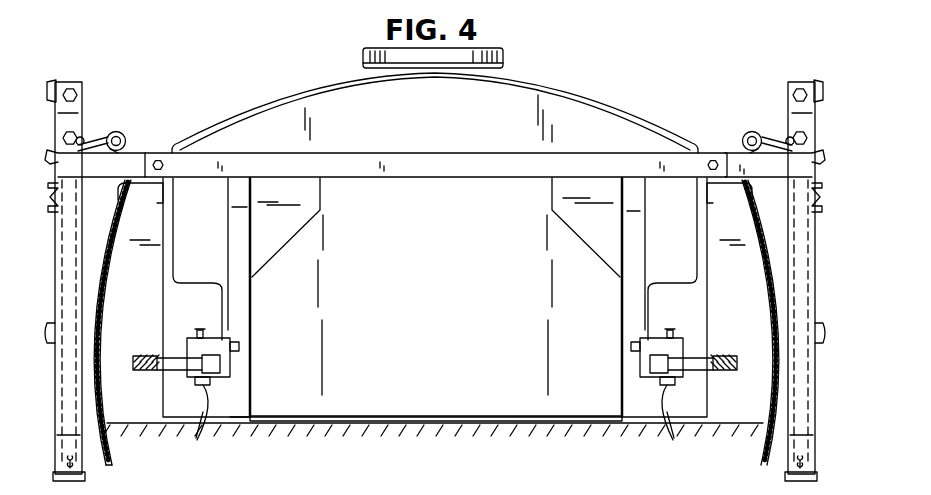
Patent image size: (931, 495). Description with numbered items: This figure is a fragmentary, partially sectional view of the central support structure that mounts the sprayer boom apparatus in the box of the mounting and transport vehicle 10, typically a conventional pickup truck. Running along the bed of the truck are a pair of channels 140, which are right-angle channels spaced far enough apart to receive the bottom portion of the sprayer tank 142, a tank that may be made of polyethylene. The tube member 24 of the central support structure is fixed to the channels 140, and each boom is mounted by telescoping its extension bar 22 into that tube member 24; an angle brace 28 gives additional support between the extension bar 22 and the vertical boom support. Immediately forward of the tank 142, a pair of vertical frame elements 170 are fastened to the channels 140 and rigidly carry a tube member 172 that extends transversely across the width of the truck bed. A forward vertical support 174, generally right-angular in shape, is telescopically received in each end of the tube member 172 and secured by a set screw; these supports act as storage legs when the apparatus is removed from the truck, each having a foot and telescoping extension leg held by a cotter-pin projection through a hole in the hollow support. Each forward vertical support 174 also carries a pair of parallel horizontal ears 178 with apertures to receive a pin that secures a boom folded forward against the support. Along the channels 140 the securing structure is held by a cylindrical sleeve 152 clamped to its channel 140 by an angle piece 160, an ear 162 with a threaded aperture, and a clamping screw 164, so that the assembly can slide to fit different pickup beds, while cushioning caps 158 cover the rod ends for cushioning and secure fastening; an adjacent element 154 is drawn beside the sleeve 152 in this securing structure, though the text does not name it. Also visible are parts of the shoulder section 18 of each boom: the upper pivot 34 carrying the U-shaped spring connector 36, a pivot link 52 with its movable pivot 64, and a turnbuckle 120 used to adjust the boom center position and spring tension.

The mounting and transport vehicle 10 is at (120, 456).
The shoulder section 18 is at (84, 94).
The extension bar 22 is at (178, 342).
The tube member 24 is at (212, 340).
The angle brace 28 is at (94, 288).
The upper pivot 34 is at (82, 131).
The U-shaped spring connector 36 is at (130, 133).
The pivot link 52 is at (57, 82).
The pivot 64 is at (72, 90).
The turnbuckle 120 is at (83, 149).
The channel 140 is at (252, 424).
The sprayer tank 142 is at (605, 103).
The cylindrical sleeve 152 is at (224, 365).
The valve 154 is at (236, 348).
The cushioning cap 158 is at (167, 354).
The angle piece 160 is at (214, 372).
The ear 162 is at (437, 439).
The clamping screw 164 is at (202, 380).
The vertical frame element 170 is at (243, 298).
The tube member 172 is at (478, 155).
The forward vertical support 174 is at (84, 462).
The ear 178 is at (58, 185).